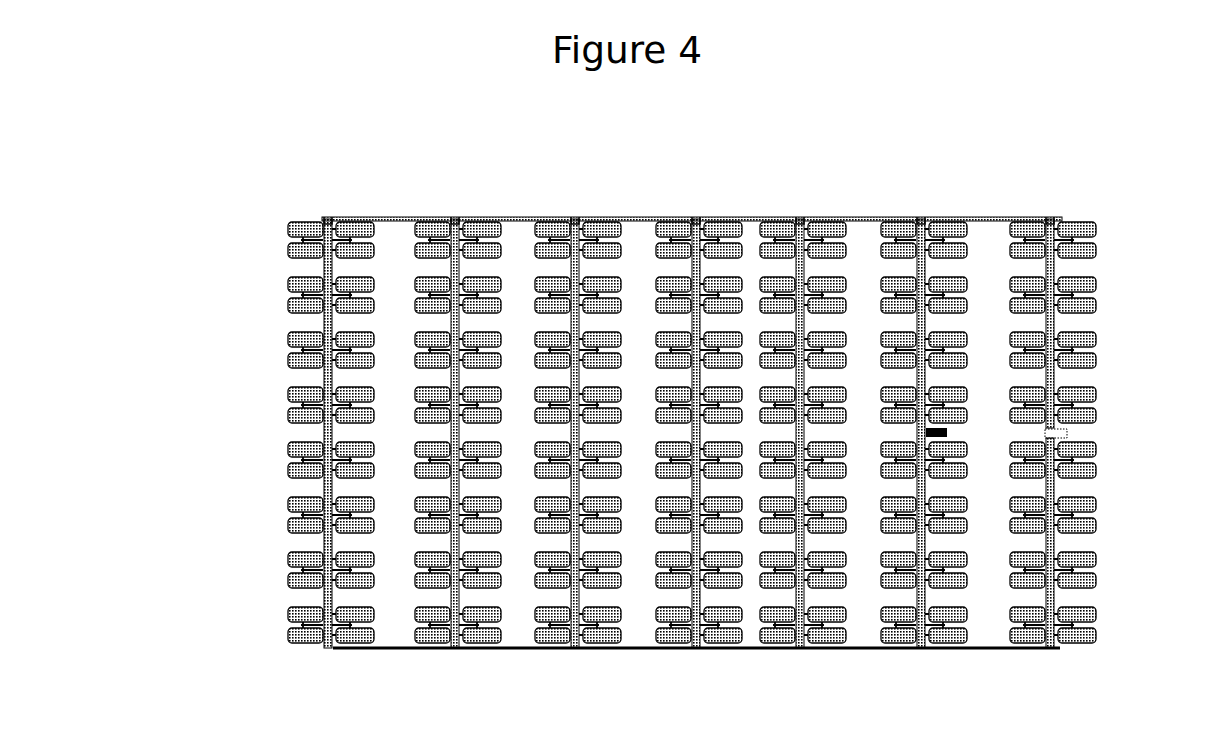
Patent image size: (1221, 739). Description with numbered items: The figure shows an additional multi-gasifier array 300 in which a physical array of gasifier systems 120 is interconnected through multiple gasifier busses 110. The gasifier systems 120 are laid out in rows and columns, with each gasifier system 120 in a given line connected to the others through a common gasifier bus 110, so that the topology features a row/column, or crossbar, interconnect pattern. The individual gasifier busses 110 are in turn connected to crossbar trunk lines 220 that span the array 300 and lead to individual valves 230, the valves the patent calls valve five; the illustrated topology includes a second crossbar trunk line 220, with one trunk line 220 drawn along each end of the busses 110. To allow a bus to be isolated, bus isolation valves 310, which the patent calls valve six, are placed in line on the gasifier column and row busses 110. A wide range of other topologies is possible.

The multi-gasifier array 300 is at (288, 163).
The crossbar trunk line 220 is at (627, 211).
The Valve 5 230 is at (933, 211).
The gasifier bus 110 is at (437, 543).
The gasifier system 120 is at (282, 251).
The bus isolation valve 310 is at (970, 432).